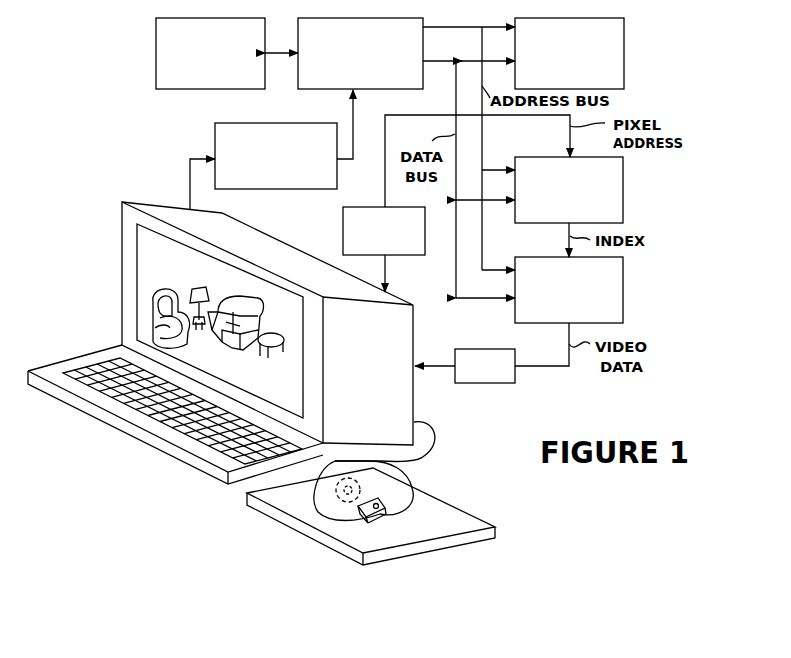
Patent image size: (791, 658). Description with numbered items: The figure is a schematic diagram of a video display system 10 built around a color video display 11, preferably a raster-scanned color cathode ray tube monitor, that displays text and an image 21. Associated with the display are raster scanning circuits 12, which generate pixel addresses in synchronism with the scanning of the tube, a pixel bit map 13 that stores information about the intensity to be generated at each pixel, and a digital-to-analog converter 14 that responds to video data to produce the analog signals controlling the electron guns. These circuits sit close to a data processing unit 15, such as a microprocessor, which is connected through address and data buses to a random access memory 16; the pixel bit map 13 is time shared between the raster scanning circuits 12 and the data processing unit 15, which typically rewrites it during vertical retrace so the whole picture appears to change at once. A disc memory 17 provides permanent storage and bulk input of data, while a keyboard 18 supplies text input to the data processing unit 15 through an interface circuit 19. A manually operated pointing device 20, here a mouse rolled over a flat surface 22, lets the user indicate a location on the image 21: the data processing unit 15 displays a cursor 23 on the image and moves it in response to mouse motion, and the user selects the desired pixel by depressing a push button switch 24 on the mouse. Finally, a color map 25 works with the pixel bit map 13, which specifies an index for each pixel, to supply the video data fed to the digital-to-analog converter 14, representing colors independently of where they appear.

The video display system 10 is at (660, 78).
The color video display 11 is at (128, 264).
The raster scanning circuits 12 is at (400, 256).
The pixel bit map 13 is at (623, 197).
The digital-to-analog converter 14 is at (486, 384).
The data processing unit 15 is at (397, 90).
The random access memory 16 is at (624, 58).
The disc memory 17 is at (202, 90).
The keyboard 18 is at (200, 437).
The interface circuit 19 is at (280, 190).
The pointing device 20 is at (412, 504).
The image 21 is at (148, 308).
The flat surface 22 is at (478, 522).
The cursor 23 is at (246, 318).
The push button switch 24 is at (384, 506).
The color map 25 is at (623, 270).